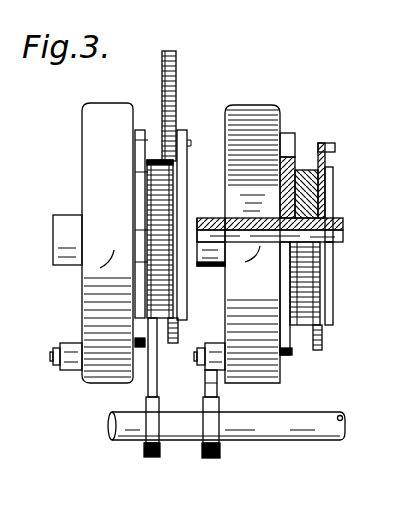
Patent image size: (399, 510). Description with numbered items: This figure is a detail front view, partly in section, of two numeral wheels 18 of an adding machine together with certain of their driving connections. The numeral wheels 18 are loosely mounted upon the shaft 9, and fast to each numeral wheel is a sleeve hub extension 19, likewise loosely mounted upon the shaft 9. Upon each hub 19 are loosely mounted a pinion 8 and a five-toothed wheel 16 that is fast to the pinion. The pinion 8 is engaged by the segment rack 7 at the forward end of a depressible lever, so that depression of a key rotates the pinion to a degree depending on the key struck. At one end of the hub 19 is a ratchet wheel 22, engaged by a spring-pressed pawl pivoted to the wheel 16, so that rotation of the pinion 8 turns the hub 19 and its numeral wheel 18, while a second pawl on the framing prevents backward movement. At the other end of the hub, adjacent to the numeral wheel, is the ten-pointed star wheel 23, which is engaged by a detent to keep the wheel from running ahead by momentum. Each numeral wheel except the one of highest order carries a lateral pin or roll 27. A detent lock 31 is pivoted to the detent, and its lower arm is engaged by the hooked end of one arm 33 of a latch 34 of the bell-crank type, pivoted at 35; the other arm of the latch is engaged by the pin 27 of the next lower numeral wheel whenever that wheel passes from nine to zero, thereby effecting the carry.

The segment rack 7 is at (177, 78).
The pinion 8 is at (158, 325).
The shaft 9 is at (347, 231).
The wheel 16 is at (316, 352).
The numeral wheel 18 is at (96, 103).
The sleeve hub extension 19 is at (218, 216).
The ratchet wheel 22 is at (334, 194).
The star wheel 23 is at (296, 134).
The lateral pin 27 is at (58, 364).
The detent lock 31 is at (146, 382).
The arm 33 is at (142, 432).
The latch 34 is at (162, 458).
The pivot 35 is at (219, 388).